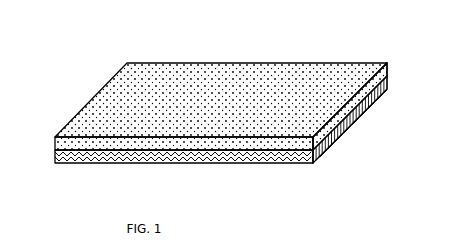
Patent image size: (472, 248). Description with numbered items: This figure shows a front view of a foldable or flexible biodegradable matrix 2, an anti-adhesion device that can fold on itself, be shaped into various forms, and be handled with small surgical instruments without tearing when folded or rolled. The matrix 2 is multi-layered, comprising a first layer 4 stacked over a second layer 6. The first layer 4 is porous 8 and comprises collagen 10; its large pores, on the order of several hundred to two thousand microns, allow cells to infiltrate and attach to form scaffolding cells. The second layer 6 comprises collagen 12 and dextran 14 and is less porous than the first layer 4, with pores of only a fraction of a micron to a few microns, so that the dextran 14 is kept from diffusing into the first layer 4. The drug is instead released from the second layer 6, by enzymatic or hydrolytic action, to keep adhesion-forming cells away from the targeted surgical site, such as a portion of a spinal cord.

The foldable or flexible biodegradable matrix 2 is at (116, 47).
The first layer 4 is at (254, 70).
The second layer 6 is at (291, 170).
The porous 8 is at (324, 70).
The collagen 10 is at (108, 103).
The collagen 12 is at (357, 120).
The dextran 14 is at (200, 163).